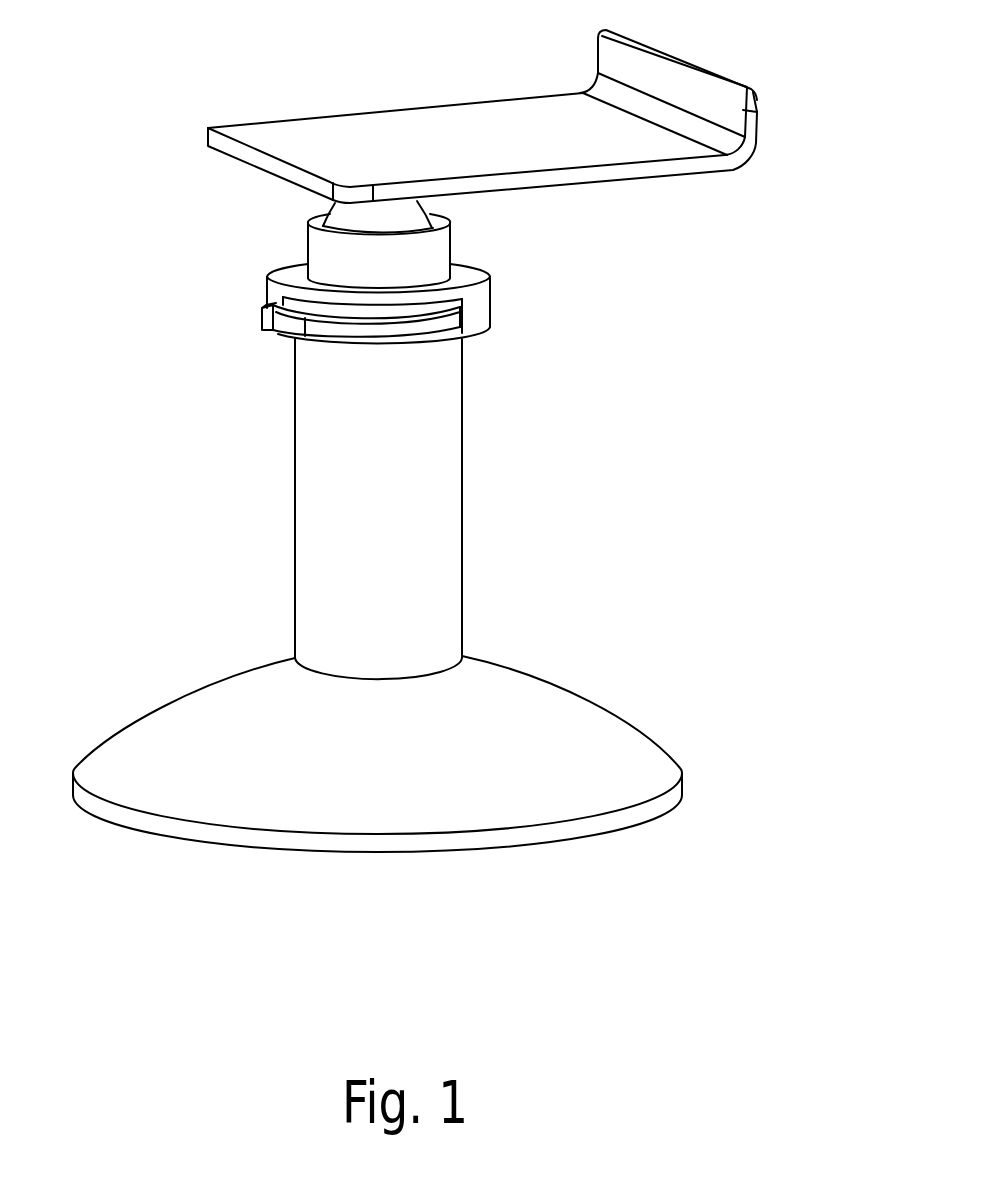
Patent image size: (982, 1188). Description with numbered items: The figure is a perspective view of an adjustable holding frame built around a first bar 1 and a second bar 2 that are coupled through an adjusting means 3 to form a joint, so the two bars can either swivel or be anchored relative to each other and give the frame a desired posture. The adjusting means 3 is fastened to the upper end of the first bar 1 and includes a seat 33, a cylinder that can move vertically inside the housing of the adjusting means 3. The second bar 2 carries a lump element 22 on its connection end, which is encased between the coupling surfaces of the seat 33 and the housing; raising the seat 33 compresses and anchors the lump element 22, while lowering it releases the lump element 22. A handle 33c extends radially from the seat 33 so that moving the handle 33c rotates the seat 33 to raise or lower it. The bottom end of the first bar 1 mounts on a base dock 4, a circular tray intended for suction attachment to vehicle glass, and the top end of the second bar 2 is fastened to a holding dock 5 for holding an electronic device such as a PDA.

The first bar 1 is at (478, 539).
The second bar 2 is at (306, 204).
The lump element 22 is at (375, 220).
The adjusting means 3 is at (508, 303).
The seat 33 is at (346, 361).
The handle 33c is at (283, 322).
The base dock 4 is at (654, 733).
The holding dock 5 is at (772, 122).